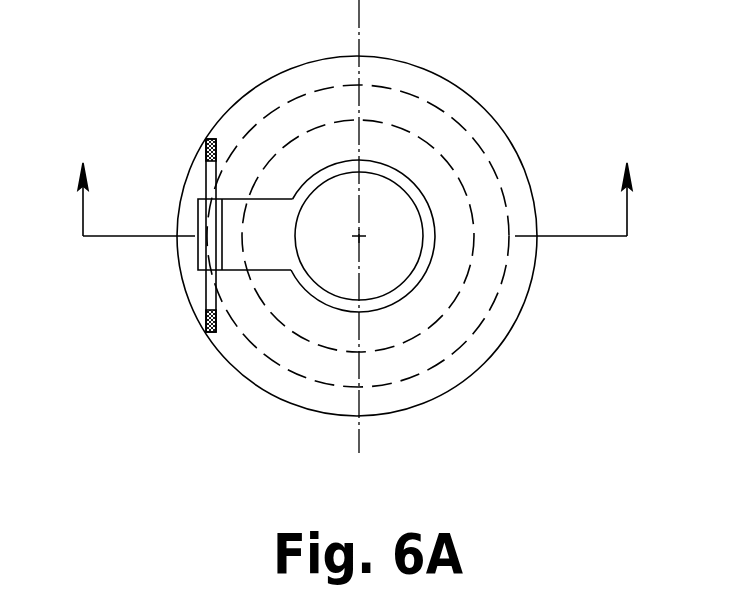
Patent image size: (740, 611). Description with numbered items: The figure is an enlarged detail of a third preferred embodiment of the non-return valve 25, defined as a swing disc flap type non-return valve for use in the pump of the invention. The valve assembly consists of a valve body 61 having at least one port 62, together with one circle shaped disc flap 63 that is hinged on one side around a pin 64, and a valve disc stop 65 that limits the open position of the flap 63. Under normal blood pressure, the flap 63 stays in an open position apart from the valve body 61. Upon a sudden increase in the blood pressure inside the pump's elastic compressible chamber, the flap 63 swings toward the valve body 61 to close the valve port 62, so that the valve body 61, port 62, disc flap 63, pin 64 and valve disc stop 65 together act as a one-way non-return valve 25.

The non-return valve 25 is at (138, 448).
The valve body 61 is at (387, 58).
The port 62 is at (382, 197).
The disc flap 63 is at (420, 217).
The pin 64 is at (206, 151).
The valve disc stop 65 is at (233, 270).